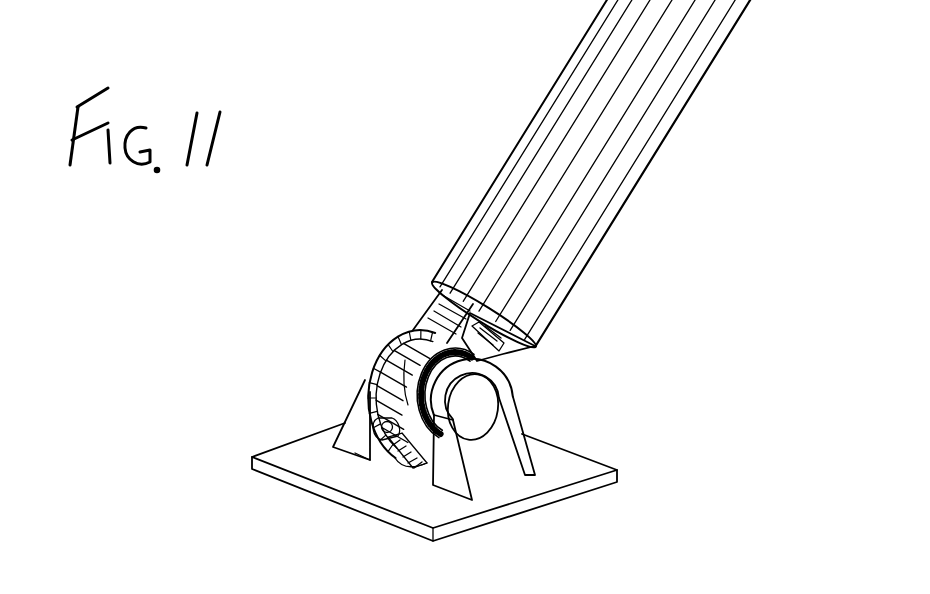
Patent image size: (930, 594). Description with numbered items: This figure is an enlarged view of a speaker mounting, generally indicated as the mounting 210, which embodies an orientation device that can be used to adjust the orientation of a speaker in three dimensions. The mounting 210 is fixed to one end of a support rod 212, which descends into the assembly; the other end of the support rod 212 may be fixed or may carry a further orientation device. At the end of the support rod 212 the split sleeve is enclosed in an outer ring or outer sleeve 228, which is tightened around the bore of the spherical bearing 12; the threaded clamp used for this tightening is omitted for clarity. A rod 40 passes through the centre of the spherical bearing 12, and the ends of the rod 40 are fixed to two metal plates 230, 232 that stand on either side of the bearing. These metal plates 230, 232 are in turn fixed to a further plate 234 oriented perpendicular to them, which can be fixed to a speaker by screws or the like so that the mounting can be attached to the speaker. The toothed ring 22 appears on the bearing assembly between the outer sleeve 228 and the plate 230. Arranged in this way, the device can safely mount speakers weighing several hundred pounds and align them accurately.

The mounting 210 is at (518, 386).
The support rod 212 is at (632, 162).
The outer sleeve 228 is at (432, 323).
The spherical bearing 12 is at (392, 336).
The toothed ring 22 is at (372, 379).
The metal plate 232 is at (369, 428).
The metal plate 230 is at (477, 460).
The rod 40 is at (483, 412).
The base plate 234 is at (377, 510).